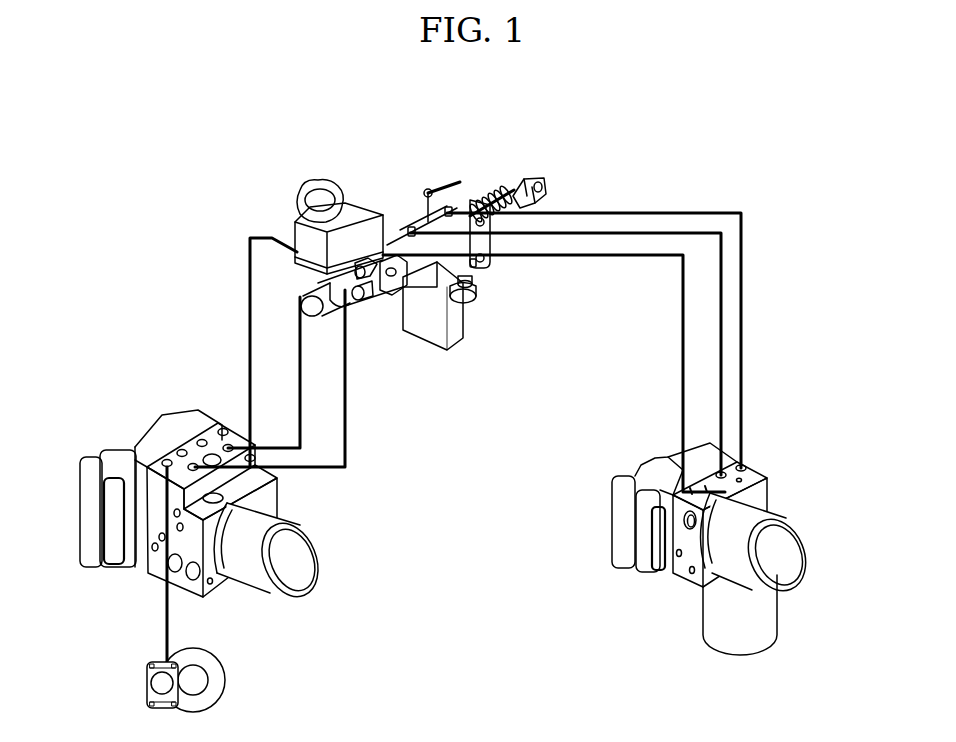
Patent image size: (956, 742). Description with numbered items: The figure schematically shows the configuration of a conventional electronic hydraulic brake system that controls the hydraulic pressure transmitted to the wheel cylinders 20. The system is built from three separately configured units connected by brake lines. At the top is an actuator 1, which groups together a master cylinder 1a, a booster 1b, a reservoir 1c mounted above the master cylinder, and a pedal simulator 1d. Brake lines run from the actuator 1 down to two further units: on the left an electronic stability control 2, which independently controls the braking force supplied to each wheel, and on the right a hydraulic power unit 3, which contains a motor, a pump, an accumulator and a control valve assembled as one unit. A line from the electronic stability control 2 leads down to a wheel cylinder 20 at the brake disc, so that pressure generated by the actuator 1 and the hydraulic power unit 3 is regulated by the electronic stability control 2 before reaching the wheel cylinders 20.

The actuator 1 is at (453, 157).
The master cylinder 1a is at (377, 303).
The booster 1b is at (427, 228).
The reservoir 1c is at (355, 212).
The pedal simulator 1d is at (462, 322).
The electronic stability control 2 is at (297, 611).
The hydraulic power unit 3 is at (803, 488).
The wheel cylinder 20 is at (146, 681).